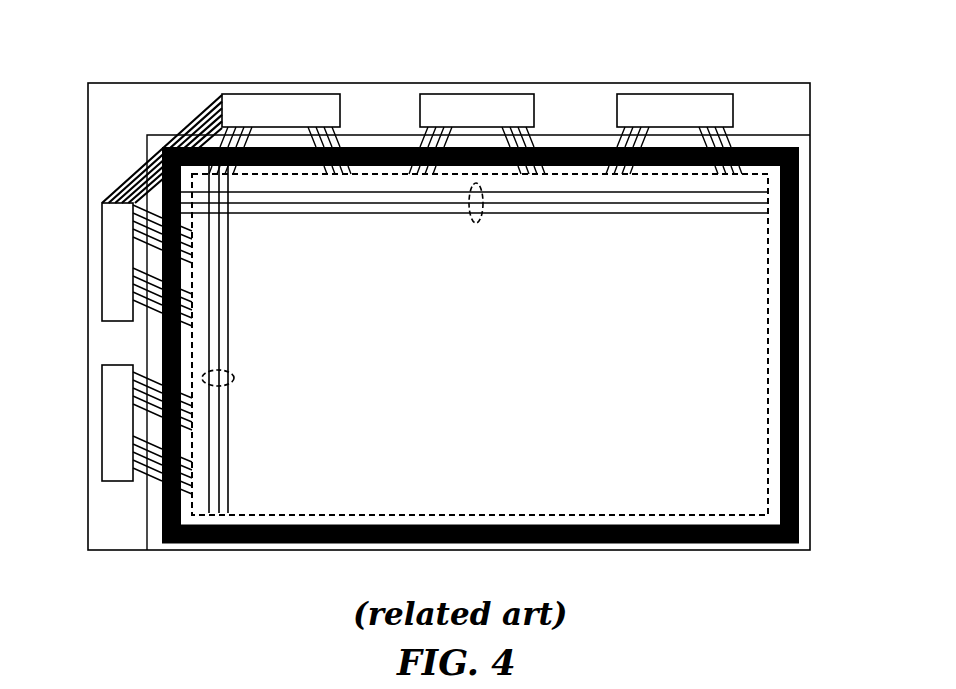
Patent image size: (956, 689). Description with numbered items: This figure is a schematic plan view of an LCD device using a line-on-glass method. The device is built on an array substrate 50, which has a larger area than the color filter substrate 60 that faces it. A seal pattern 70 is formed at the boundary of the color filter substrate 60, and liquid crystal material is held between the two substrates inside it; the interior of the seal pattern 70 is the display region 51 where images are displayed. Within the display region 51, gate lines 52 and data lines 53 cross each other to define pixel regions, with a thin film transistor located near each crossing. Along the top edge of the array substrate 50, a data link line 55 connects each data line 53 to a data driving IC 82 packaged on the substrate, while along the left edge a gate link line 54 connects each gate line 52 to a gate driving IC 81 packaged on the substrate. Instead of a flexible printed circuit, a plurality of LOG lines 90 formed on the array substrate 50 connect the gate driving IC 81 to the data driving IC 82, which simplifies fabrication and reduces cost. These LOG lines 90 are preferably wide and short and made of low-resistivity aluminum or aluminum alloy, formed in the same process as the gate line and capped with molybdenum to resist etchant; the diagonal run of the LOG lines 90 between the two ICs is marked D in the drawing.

The array substrate 50 is at (811, 110).
The color filter substrate 60 is at (363, 135).
The seal pattern 70 is at (800, 260).
The display region 51 is at (768, 357).
The gate line 52 is at (479, 223).
The data line 53 is at (230, 381).
The data driving IC 82 is at (279, 105).
The data link line 55 is at (622, 133).
The gate driving IC 81 is at (108, 245).
The gate link line 54 is at (145, 318).
The LOG lines 90 is at (126, 178).
The distance D is at (158, 142).